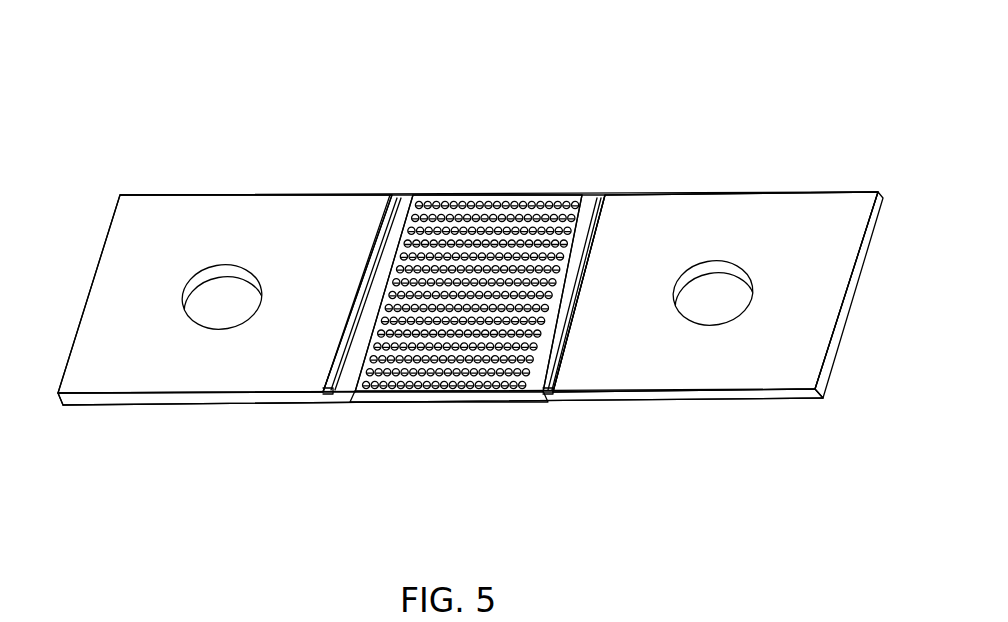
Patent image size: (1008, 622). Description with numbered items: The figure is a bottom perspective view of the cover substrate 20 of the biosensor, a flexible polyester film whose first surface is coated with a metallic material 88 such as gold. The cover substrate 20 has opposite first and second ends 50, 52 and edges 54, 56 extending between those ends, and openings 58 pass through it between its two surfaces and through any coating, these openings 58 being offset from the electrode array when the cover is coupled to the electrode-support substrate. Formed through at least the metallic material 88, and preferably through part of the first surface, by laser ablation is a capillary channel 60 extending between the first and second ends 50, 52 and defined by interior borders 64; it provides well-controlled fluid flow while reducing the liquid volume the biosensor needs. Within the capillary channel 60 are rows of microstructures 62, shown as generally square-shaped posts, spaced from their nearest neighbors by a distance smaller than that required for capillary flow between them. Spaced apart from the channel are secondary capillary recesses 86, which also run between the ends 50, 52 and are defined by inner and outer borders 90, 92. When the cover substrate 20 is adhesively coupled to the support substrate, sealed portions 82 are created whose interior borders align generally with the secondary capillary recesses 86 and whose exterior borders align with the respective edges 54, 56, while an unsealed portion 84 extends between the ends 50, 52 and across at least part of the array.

The cover substrate 20 is at (138, 153).
The first end 50 is at (670, 395).
The second end 52 is at (728, 192).
The edge 54 is at (100, 258).
The edge 56 is at (843, 310).
The openings 58 is at (220, 251).
The capillary channel 60 is at (493, 173).
The microstructures 62 is at (371, 323).
The interior borders 64 is at (418, 203).
The sealed portions 82 is at (174, 374).
The unsealed portion 84 is at (382, 426).
The secondary capillary recesses 86 is at (387, 176).
The metallic material 88 is at (433, 205).
The inner borders 90 is at (323, 390).
The outer borders 92 is at (383, 206).